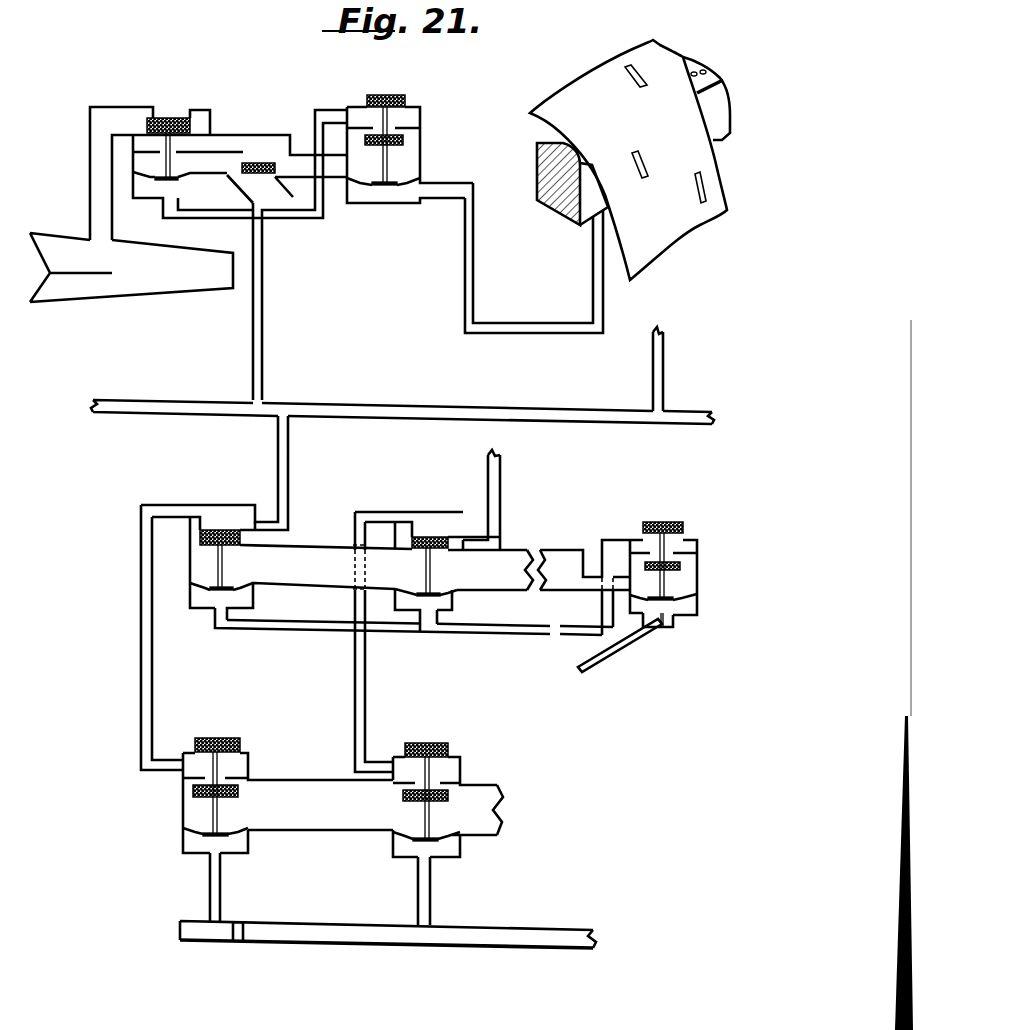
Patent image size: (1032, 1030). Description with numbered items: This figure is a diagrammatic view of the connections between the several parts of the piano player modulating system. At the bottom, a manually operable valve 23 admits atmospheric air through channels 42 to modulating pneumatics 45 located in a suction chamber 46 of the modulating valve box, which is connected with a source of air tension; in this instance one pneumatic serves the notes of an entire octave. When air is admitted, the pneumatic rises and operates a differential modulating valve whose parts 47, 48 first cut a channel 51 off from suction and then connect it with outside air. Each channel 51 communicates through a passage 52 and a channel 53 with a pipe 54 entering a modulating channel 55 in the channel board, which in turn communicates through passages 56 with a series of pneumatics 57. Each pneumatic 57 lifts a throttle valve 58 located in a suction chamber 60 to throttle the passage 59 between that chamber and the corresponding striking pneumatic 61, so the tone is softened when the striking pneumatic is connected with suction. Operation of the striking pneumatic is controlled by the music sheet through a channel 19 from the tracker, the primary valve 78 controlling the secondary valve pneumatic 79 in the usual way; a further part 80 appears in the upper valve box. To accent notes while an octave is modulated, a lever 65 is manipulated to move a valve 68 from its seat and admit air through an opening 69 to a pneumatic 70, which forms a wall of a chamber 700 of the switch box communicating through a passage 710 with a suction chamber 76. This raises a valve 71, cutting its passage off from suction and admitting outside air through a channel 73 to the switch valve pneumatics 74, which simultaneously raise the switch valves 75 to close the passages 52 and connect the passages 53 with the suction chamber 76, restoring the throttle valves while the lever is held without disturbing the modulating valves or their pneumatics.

The throttle valve cap 80 is at (187, 116).
The throttle valve 58 is at (252, 160).
The passage 59 is at (268, 151).
The throttle valve pneumatic 57 is at (243, 178).
The secondary valve pneumatic 79 is at (147, 178).
The striking pneumatic 61 is at (148, 296).
The suction chamber 60 is at (412, 160).
The primary valve 78 is at (405, 101).
The channel 19 is at (531, 333).
The passage 56 is at (262, 335).
The modulating channel 55 is at (382, 414).
The pipe 54 is at (284, 454).
The channel 51 is at (141, 686).
The passage 52 is at (217, 522).
The switch valve 75 is at (223, 545).
The channel 53 is at (267, 537).
The switch valve pneumatic 74 is at (247, 591).
The channel 73 is at (268, 628).
The suction chamber 76 is at (563, 567).
The passage 710 is at (597, 585).
The chamber 700 is at (687, 583).
The valve 71 is at (680, 567).
The pneumatic 70 is at (682, 598).
The valve 68 is at (683, 623).
The opening 69 is at (672, 630).
The lever 65 is at (614, 660).
The modulating valve part 48 is at (225, 738).
The modulating valve part 47 is at (197, 797).
The modulating pneumatic 45 is at (197, 833).
The suction chamber 46 is at (487, 818).
The channel 42 is at (215, 892).
The valve 23 is at (513, 932).